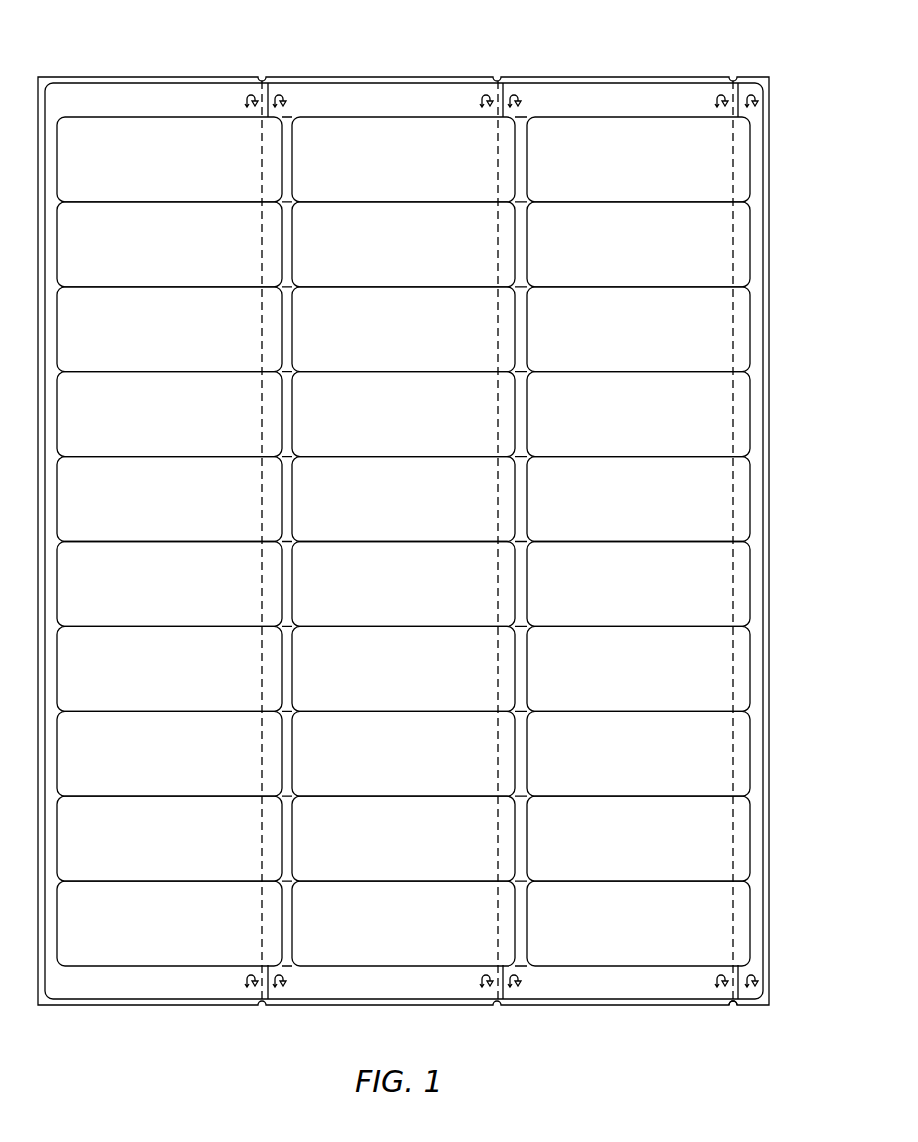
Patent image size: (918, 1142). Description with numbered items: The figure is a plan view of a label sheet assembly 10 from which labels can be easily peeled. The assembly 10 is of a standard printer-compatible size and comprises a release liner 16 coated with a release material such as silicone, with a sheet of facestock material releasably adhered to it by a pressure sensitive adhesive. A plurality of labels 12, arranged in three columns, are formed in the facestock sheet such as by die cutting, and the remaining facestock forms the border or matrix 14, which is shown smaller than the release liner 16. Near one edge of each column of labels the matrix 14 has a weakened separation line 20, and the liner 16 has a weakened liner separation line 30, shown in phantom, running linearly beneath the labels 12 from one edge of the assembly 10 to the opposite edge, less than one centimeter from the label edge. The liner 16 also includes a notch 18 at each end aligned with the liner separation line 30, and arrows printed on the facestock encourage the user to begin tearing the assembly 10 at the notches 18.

The label sheet assembly 10 is at (429, 535).
The labels 12 is at (628, 170).
The matrix 14 is at (602, 985).
The release liner 16 is at (643, 1006).
The notch 18 is at (733, 1006).
The weakened separation line 20 is at (745, 978).
The liner separation line 30 is at (735, 912).